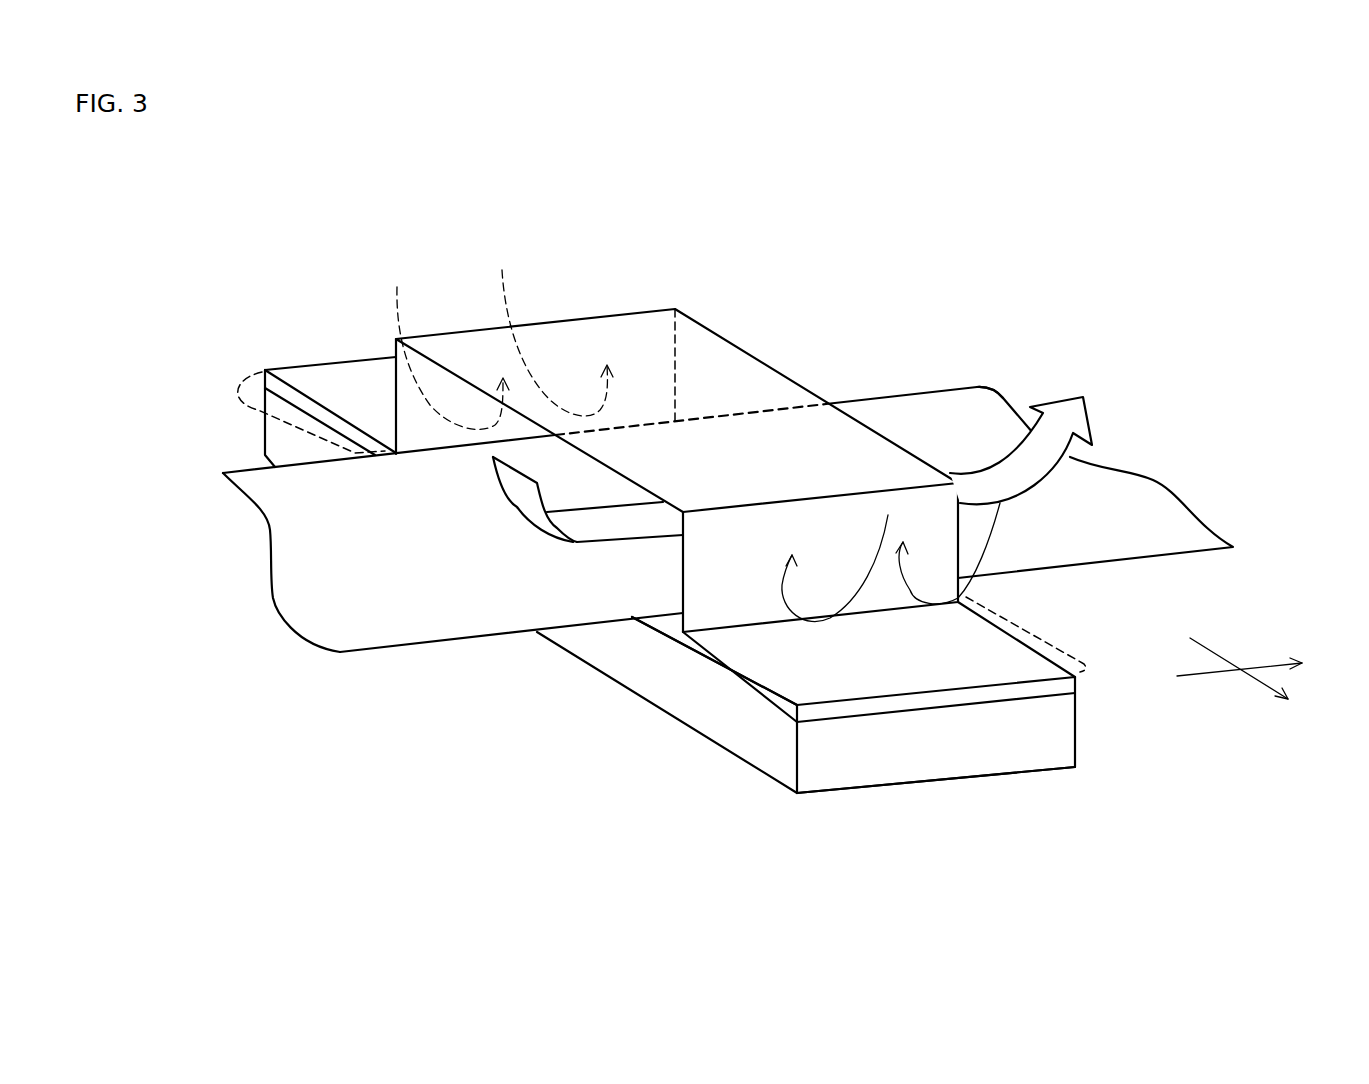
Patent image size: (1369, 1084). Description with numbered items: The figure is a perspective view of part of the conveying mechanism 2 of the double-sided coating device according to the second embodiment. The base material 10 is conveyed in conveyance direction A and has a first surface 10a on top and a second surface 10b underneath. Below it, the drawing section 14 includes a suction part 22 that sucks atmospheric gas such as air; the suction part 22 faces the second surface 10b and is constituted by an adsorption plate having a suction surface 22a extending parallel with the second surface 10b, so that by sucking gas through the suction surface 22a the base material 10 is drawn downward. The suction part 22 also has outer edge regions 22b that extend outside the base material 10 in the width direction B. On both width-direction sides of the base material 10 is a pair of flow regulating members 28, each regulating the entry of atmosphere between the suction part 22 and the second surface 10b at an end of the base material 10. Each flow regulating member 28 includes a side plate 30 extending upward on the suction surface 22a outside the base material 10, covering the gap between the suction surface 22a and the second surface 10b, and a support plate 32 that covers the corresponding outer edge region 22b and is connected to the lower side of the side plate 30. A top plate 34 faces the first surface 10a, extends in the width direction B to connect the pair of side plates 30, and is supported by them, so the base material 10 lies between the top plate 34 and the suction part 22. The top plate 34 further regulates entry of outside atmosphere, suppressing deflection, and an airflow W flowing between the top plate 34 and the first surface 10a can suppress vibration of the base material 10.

The conveying mechanism 2 is at (795, 908).
The base material 10 is at (402, 650).
The first surface 10a is at (903, 420).
The second surface 10b is at (468, 600).
The drawing section 14 is at (884, 790).
The suction part 22 is at (1022, 743).
The suction surface 22a is at (660, 622).
The outer edge region 22b is at (1052, 624).
The flow regulating member 28 is at (268, 250).
The side plate 30 is at (395, 392).
The support plate 32 is at (337, 385).
The top plate 34 is at (715, 358).